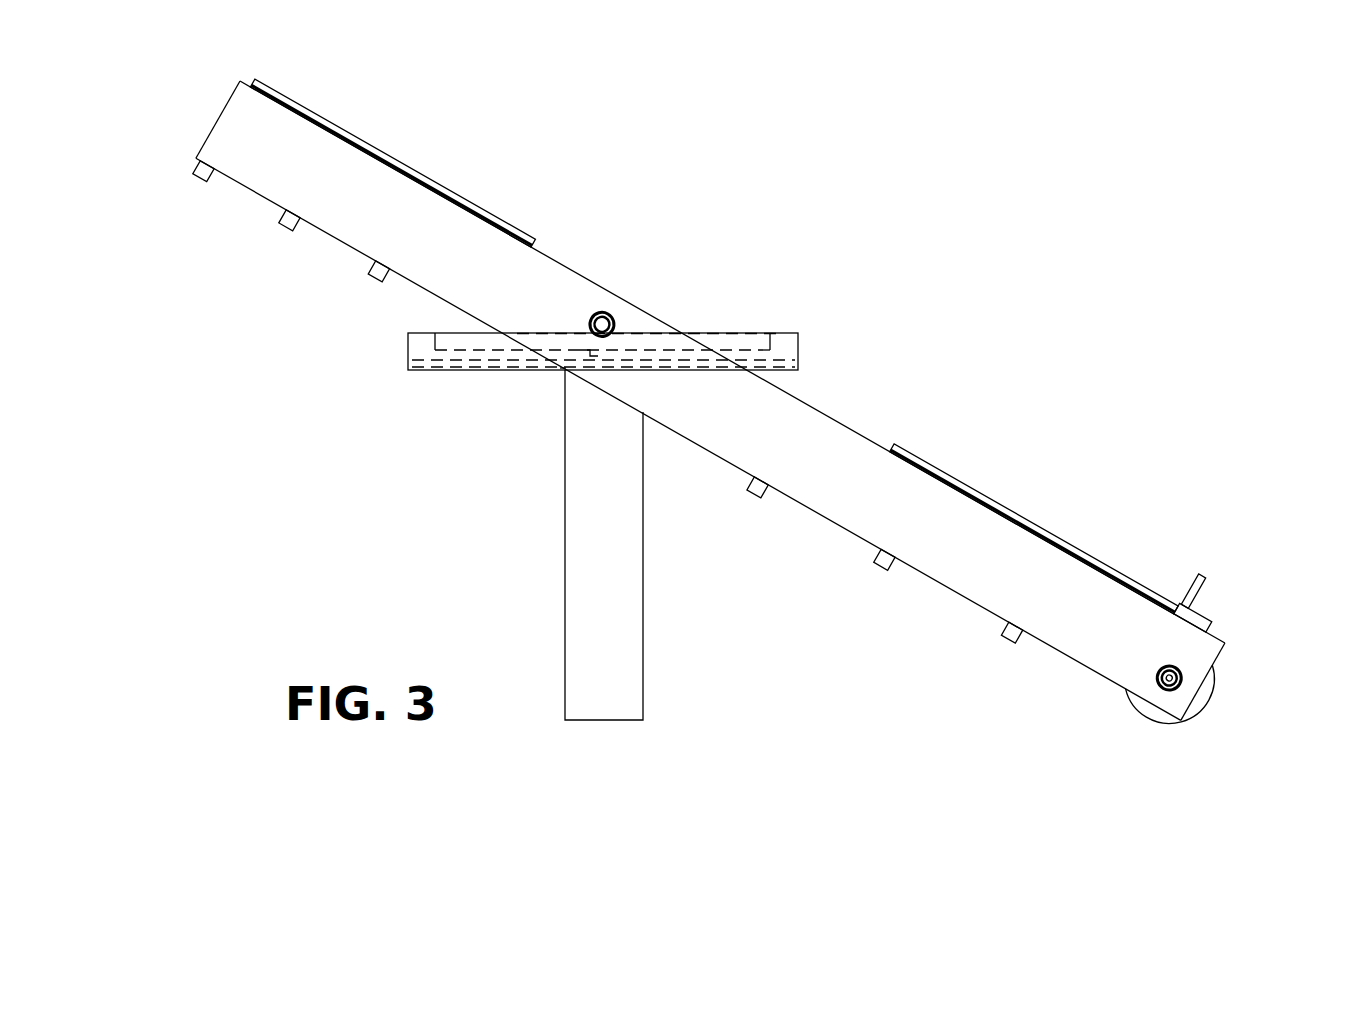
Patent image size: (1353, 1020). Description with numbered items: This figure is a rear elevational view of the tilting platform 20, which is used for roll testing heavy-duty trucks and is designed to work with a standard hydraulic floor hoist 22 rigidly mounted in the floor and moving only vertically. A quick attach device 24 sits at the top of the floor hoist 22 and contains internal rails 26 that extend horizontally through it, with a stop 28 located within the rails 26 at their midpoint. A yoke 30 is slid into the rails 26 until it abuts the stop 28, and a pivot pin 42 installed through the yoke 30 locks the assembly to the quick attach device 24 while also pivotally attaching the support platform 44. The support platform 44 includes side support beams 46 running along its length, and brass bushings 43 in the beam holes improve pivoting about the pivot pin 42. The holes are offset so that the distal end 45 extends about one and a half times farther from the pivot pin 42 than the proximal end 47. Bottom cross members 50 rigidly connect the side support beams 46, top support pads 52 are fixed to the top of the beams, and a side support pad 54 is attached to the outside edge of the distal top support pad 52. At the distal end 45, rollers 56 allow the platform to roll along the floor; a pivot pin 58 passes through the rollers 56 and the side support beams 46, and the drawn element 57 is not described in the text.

The tilting platform 20 is at (737, 395).
The floor hoist 22 is at (561, 557).
The quick attach device 24 is at (428, 376).
The internal rails 26 is at (498, 368).
The stop 28 is at (562, 372).
The yoke 30 is at (724, 390).
The pivot pin 42 is at (602, 324).
The brass bushings 43 is at (602, 324).
The support platform 44 is at (1034, 529).
The distal end 45 is at (1203, 681).
The side support beams 46 is at (732, 362).
The proximal end 47 is at (218, 119).
The bottom cross members 50 is at (608, 402).
The top support pads 52 is at (714, 346).
The side support pad 54 is at (1201, 602).
The rollers 56 is at (1171, 687).
The axle 57 is at (1169, 678).
The pivot pin 58 is at (1169, 678).